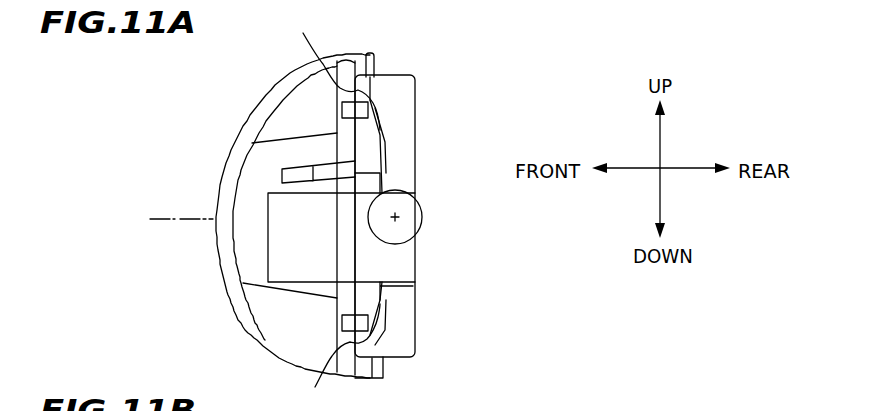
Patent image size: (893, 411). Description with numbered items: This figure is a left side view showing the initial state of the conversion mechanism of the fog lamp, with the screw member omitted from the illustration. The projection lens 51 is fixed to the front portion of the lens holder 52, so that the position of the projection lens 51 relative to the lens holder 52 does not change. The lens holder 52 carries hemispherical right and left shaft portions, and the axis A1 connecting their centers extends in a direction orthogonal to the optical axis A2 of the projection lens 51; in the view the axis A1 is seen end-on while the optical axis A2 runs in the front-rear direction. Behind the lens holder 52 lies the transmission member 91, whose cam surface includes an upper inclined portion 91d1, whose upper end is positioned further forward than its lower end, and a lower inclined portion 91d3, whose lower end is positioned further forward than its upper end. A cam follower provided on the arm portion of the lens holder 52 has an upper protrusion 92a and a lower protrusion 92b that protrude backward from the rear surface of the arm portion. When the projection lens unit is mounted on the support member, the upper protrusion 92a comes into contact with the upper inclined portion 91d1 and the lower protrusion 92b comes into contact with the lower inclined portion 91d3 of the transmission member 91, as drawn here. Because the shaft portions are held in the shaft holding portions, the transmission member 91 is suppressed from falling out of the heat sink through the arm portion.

The projection lens 51 is at (277, 118).
The lens holder 52 is at (373, 55).
The transmission member 91 is at (426, 166).
The upper inclined portion 91d1 is at (329, 72).
The lower inclined portion 91d3 is at (327, 357).
The upper protrusion 92a is at (357, 120).
The lower protrusion 92b is at (360, 326).
The axis A1 is at (398, 222).
The optical axis A2 is at (188, 218).